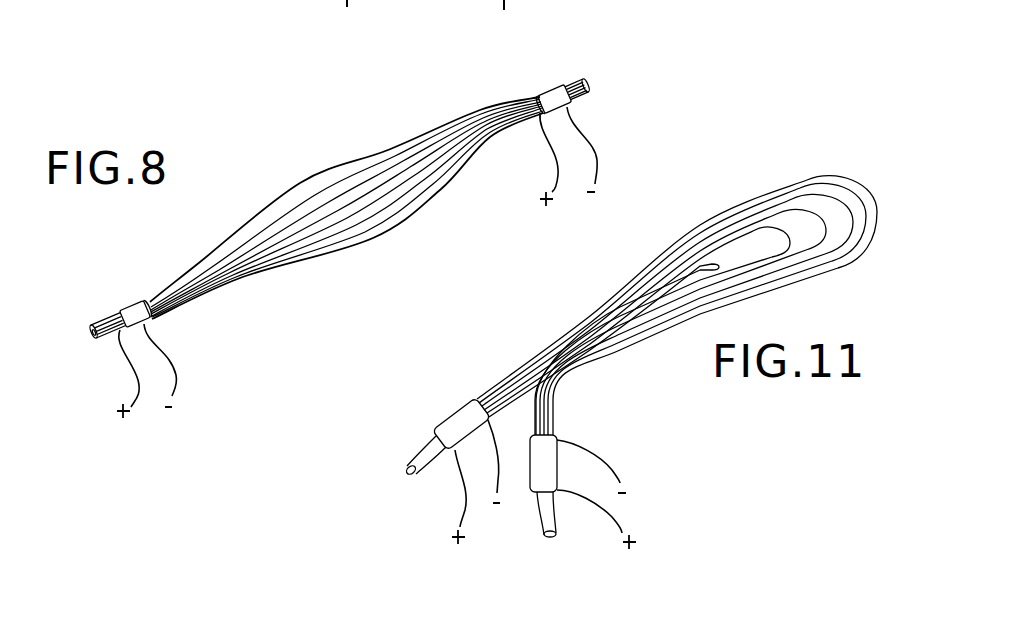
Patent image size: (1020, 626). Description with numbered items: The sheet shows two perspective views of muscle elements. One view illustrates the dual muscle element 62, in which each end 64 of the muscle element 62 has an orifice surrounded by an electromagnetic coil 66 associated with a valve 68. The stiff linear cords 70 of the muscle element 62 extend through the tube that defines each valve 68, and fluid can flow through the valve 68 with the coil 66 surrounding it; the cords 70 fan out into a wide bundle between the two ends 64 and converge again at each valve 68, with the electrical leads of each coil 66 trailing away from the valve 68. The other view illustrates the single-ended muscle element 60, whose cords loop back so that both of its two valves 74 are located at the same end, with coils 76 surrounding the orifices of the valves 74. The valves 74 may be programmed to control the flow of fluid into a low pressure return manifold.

In FIG. 11, the single-ended muscle element 60 is at (682, 228).
In FIG. 8, the dual muscle element 62 is at (393, 237).
In FIG. 8, the end of the muscle element 64 is at (108, 318).
In FIG. 8, the electromagnetic coil 66 is at (128, 384).
In FIG. 8, the valve 68 is at (128, 305).
In FIG. 8, the stiff linear cords 70 is at (303, 186).
In FIG. 11, the valve 74 is at (460, 415).
In FIG. 11, the coil 76 is at (463, 490).